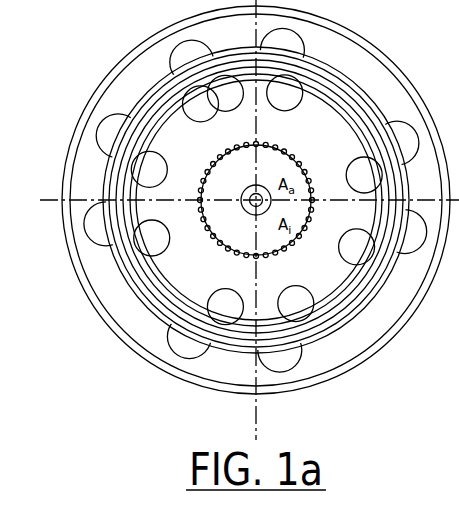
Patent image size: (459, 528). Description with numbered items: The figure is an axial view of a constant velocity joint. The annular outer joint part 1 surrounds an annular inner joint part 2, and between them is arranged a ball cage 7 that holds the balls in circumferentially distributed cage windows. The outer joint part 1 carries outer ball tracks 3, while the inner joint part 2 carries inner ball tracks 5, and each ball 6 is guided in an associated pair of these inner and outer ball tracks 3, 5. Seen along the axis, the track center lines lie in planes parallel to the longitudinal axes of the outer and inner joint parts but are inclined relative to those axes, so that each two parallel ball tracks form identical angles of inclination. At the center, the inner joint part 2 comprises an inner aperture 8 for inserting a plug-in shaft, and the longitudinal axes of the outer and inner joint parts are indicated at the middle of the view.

The outer joint part 1 is at (356, 62).
The inner joint part 2 is at (277, 100).
The outer ball tracks 3 is at (176, 58).
The inner ball tracks 5 is at (229, 104).
The ball 6 is at (203, 52).
The ball cage 7 is at (146, 98).
The inner aperture 8 is at (212, 233).